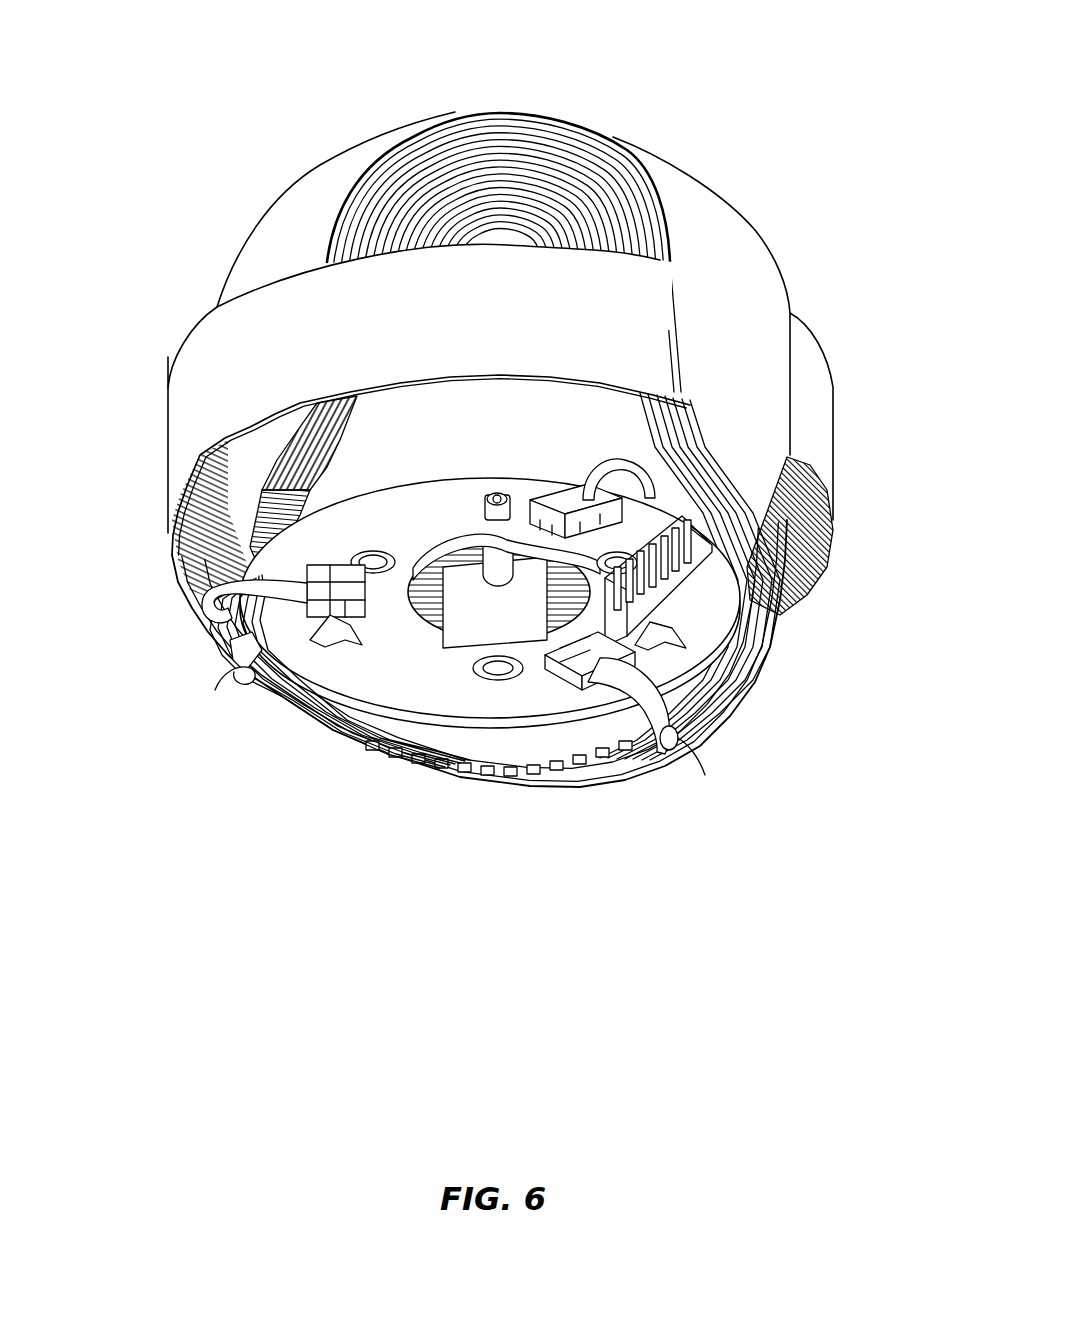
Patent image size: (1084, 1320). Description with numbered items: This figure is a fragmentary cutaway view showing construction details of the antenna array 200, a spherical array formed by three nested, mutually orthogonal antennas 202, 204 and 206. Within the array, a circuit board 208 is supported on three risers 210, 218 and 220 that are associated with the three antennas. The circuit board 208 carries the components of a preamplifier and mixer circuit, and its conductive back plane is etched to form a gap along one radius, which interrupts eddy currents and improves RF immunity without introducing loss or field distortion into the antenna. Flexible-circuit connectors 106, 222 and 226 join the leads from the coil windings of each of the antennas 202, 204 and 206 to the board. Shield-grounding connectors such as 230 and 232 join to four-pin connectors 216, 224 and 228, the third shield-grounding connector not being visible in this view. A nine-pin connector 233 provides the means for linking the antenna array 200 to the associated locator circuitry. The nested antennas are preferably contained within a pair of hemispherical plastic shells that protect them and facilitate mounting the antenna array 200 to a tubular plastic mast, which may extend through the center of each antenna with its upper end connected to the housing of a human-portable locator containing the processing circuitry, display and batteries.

The antenna array 200 is at (777, 72).
The antenna 202 is at (288, 208).
The antenna 204 is at (177, 424).
The antenna 206 is at (747, 290).
The circuit board 208 is at (380, 503).
The riser 210 is at (500, 482).
The four-pin connector 216 is at (563, 494).
The flexible-circuit connector 106 is at (603, 470).
The riser 218 is at (345, 618).
The riser 220 is at (687, 654).
The flexible-circuit connector 222 is at (651, 708).
The four-pin connector 224 is at (594, 650).
The flexible-circuit connector 226 is at (215, 600).
The four-pin connector 228 is at (233, 638).
The shield-grounding connector 230 is at (226, 668).
The shield-grounding connector 232 is at (680, 744).
The nine-pin connector 233 is at (667, 577).